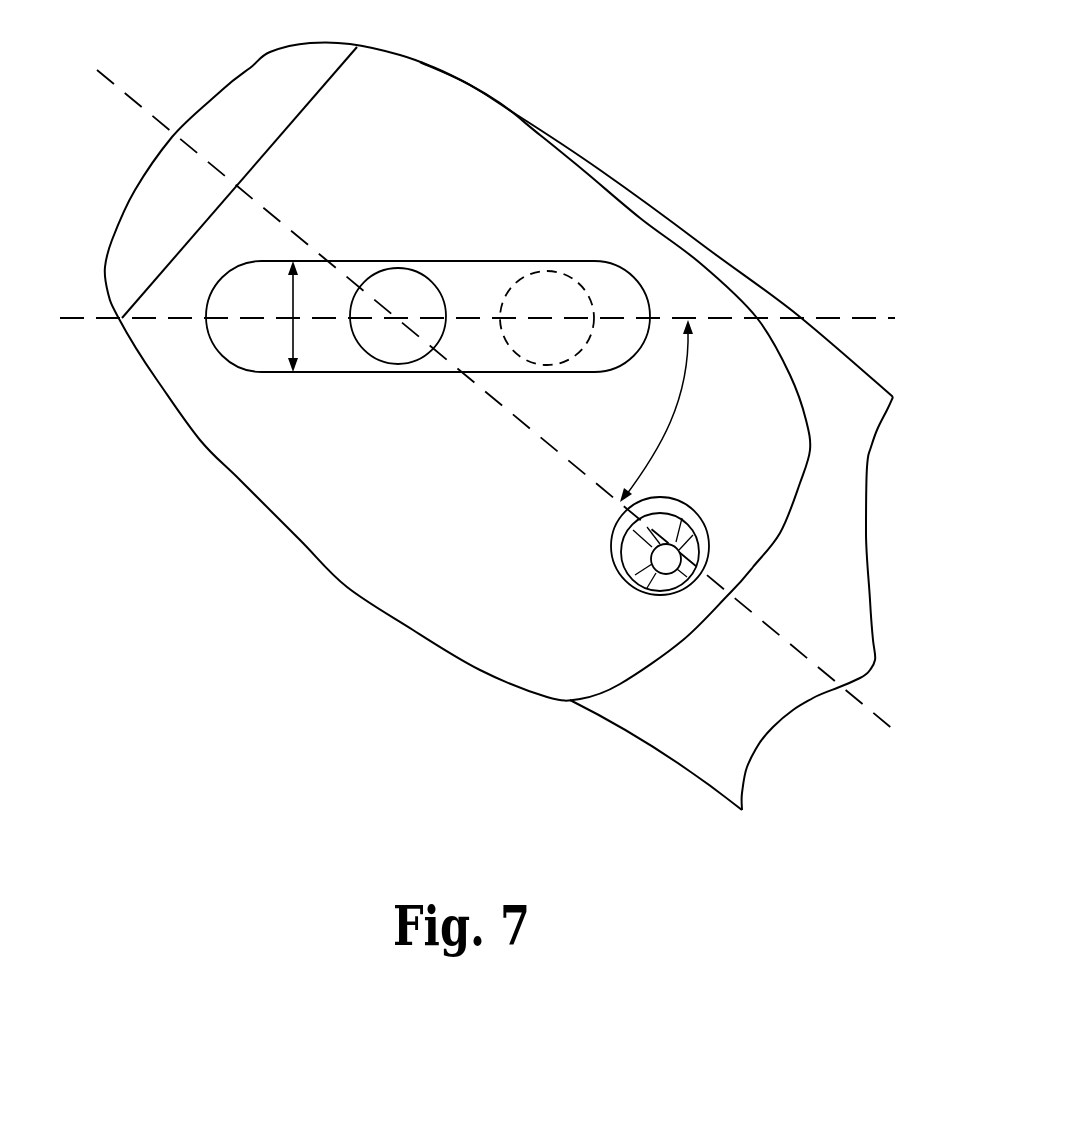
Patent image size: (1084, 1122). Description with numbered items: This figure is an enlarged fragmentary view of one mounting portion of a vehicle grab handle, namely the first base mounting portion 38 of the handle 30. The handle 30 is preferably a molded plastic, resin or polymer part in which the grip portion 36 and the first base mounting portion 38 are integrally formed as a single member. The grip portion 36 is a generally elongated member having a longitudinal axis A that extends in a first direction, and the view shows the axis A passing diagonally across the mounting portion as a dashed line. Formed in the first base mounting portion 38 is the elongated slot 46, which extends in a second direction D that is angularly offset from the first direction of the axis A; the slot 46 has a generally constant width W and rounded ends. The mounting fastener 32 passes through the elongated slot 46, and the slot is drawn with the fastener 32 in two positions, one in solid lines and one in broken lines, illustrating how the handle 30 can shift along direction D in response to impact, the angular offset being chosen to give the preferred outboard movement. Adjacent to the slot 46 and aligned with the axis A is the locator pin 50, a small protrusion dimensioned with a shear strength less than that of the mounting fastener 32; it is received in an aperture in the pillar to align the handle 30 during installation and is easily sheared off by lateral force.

The handle 30 is at (690, 143).
The mounting fastener 32 is at (405, 268).
The grip portion 36 is at (877, 380).
The first base mounting portion 38 is at (548, 140).
The elongated slot 46 is at (497, 270).
The locator pin 50 is at (668, 500).
The longitudinal axis A is at (137, 105).
The second direction D is at (853, 318).
The width W is at (293, 295).